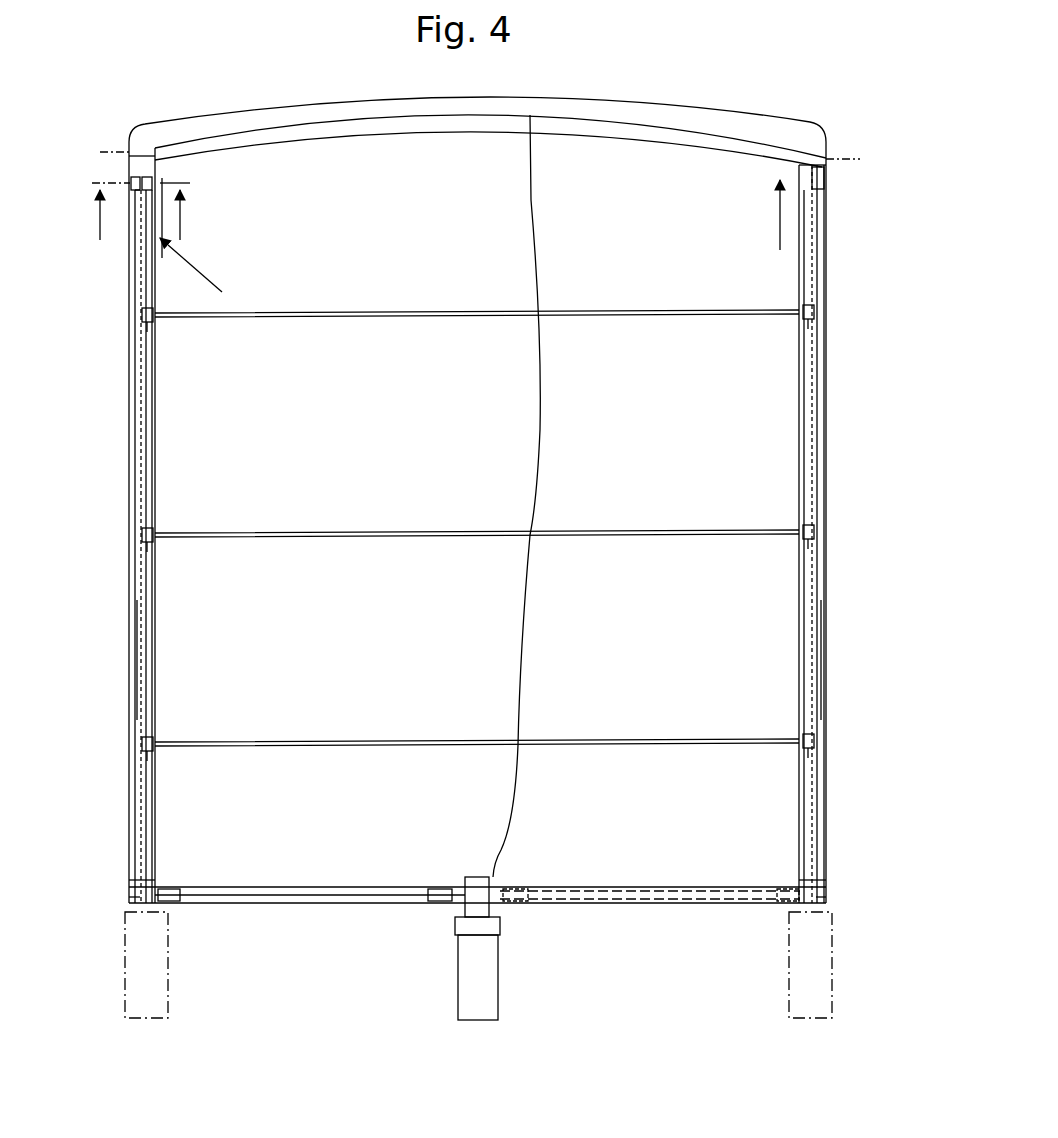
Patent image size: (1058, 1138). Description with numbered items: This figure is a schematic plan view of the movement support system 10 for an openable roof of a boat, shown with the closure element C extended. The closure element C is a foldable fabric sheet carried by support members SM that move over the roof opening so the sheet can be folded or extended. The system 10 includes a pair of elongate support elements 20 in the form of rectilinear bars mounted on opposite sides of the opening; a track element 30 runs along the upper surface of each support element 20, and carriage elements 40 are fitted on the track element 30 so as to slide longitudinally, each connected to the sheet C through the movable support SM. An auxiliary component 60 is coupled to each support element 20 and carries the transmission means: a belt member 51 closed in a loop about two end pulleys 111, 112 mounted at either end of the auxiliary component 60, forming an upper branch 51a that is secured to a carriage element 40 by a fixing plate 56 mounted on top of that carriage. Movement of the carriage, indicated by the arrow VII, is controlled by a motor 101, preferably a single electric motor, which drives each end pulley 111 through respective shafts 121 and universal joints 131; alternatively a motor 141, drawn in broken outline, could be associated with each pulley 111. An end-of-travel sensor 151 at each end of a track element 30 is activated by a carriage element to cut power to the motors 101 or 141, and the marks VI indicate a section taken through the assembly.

The movement support system 10 is at (748, 100).
The elongate support element 20 is at (160, 446).
The track element 30 is at (160, 576).
The carriage element 40 is at (160, 164).
The belt member 51 is at (144, 620).
The upper branch of the belt 51a is at (138, 680).
The fixing plate 56 is at (132, 205).
The auxiliary component 60 is at (126, 560).
The motor 101 is at (498, 980).
The end pulley 111 is at (129, 896).
The end pulley 112 is at (115, 152).
The shaft 121 is at (320, 898).
The universal joint 131 is at (176, 902).
The motor 141 is at (168, 975).
The end-of-travel sensor 151 is at (128, 166).
The support member SM is at (276, 134).
The closure element C is at (768, 338).
The section line VI is at (426, 218).
The arrow VII is at (205, 273).